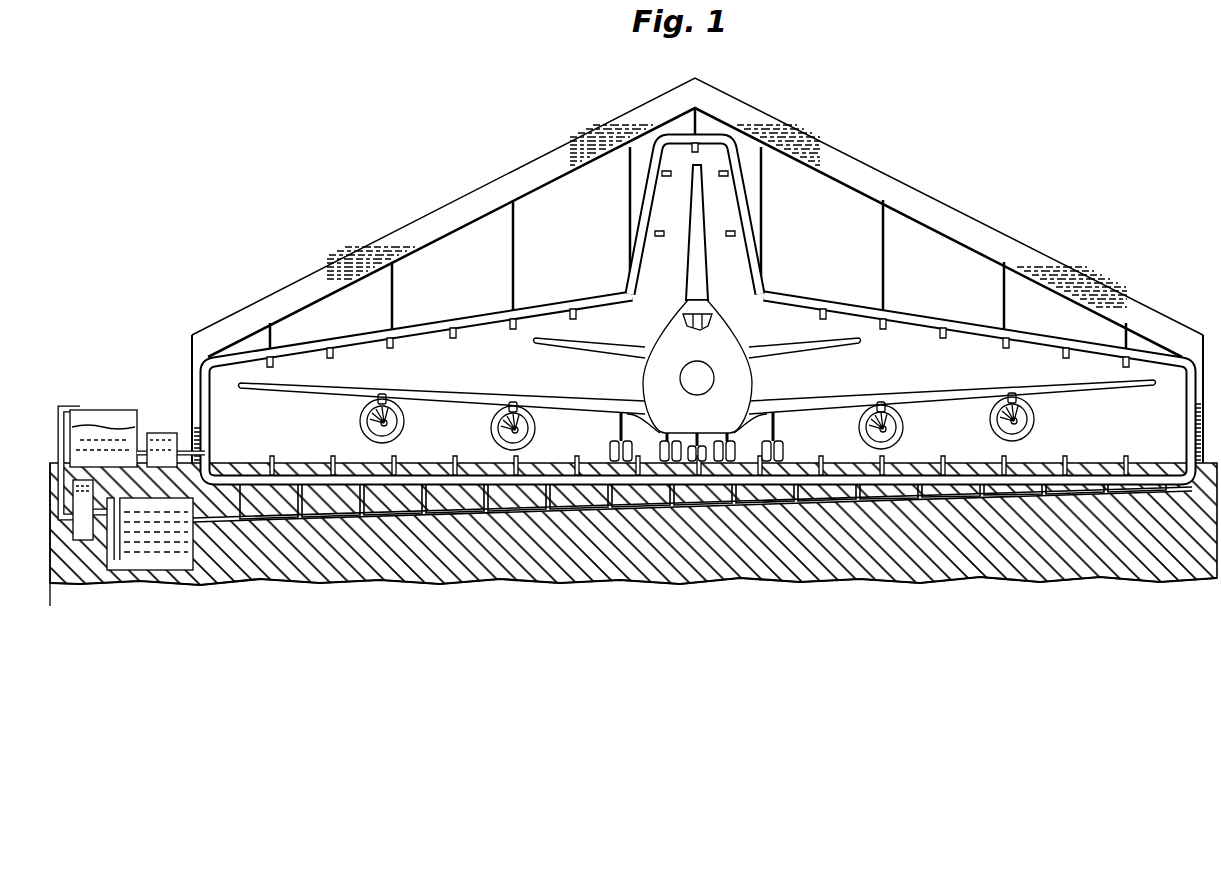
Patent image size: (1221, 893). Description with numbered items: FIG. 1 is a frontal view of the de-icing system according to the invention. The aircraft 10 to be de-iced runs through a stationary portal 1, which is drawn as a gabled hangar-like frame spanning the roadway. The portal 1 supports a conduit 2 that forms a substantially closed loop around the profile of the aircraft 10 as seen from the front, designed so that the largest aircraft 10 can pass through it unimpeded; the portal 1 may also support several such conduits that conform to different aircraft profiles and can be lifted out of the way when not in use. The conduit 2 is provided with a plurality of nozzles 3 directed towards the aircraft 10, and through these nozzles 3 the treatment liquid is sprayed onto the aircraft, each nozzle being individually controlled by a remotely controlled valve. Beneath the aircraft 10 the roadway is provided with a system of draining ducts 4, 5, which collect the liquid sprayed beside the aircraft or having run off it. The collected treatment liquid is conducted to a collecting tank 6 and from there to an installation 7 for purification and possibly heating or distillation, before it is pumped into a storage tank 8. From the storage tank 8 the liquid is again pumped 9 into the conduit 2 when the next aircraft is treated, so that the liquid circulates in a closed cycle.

The stationary portal 1 is at (272, 305).
The conduit 2 is at (318, 354).
The nozzles 3 is at (385, 347).
The draining duct 4 is at (298, 470).
The draining duct 5 is at (237, 522).
The collecting tank 6 is at (140, 518).
The installation for purification 7 is at (83, 525).
The storage tank 8 is at (112, 412).
The pump 9 is at (158, 433).
The aircraft 10 is at (712, 343).